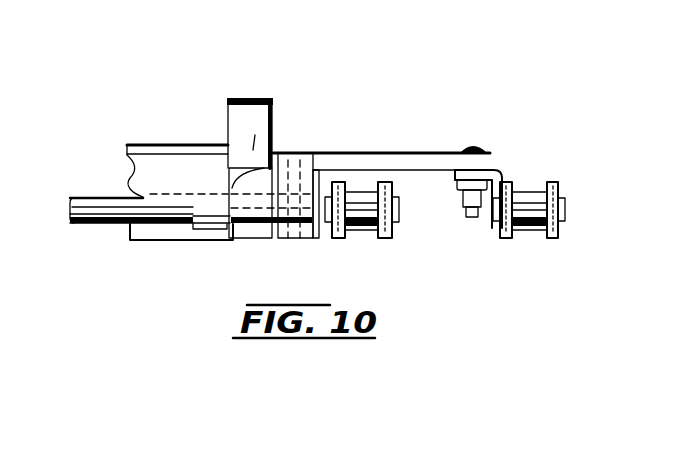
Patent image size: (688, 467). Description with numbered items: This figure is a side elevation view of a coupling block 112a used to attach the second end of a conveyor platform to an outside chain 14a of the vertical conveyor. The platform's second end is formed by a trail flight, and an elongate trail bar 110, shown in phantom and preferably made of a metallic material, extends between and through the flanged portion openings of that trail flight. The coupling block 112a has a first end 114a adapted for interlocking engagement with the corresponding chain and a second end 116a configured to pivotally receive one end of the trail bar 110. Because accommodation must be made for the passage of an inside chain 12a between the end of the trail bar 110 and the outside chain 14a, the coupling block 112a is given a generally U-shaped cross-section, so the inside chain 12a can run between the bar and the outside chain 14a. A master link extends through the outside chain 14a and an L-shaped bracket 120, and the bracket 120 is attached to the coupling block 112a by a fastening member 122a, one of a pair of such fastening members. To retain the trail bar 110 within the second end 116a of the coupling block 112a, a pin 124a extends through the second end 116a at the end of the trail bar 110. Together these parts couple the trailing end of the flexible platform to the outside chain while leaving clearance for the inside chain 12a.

The trail bar 110 is at (90, 224).
The coupling block 112a is at (383, 155).
The first end 114a is at (488, 180).
The second end 116a is at (316, 238).
The L-shaped bracket 120 is at (505, 170).
The fastening member 122a is at (474, 147).
The pin 124a is at (295, 153).
The inside chain 12a is at (392, 228).
The outside chain 14a is at (556, 184).